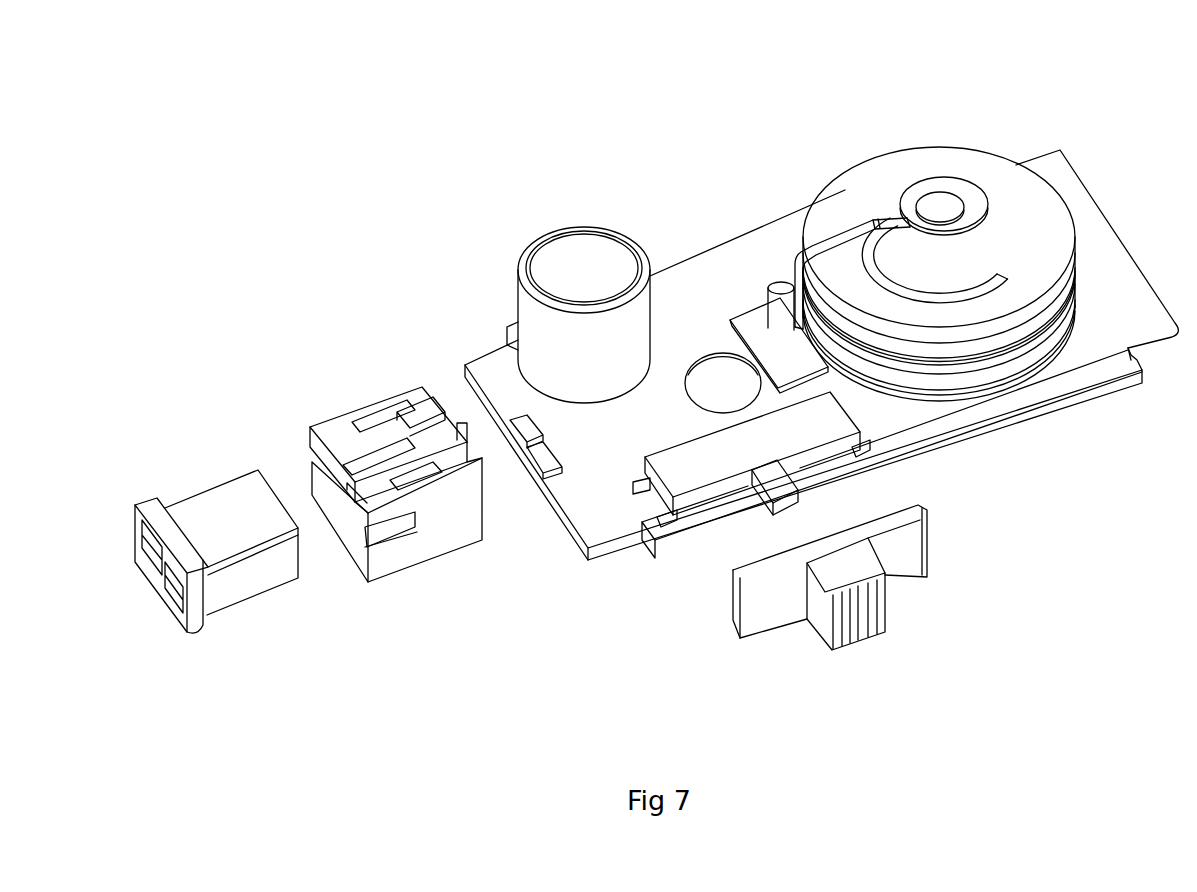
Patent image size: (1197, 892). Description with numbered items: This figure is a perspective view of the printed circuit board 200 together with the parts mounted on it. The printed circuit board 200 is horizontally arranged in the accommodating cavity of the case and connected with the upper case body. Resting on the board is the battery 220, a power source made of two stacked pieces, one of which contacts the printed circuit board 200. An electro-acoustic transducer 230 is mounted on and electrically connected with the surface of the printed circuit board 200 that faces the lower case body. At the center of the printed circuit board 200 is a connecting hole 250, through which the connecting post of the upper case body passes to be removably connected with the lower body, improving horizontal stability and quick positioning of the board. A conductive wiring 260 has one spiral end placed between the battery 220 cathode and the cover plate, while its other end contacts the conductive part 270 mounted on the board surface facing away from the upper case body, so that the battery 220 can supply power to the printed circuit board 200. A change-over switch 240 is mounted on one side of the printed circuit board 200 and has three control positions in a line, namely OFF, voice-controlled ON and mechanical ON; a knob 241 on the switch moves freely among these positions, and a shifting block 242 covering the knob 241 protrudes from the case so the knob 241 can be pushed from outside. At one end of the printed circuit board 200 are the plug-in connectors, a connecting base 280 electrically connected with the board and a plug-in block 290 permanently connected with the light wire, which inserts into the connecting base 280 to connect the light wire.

The printed circuit board 200 is at (893, 423).
The battery 220 is at (1028, 242).
The electro-acoustic transducer 230 is at (560, 270).
The change-over switch 240 is at (680, 473).
The knob 241 is at (760, 493).
The shifting block 242 is at (852, 572).
The connecting hole 250 is at (713, 383).
The conductive wiring 260 is at (848, 228).
The conductive part 270 is at (760, 325).
The connecting base 280 is at (427, 533).
The plug-in block 290 is at (218, 507).